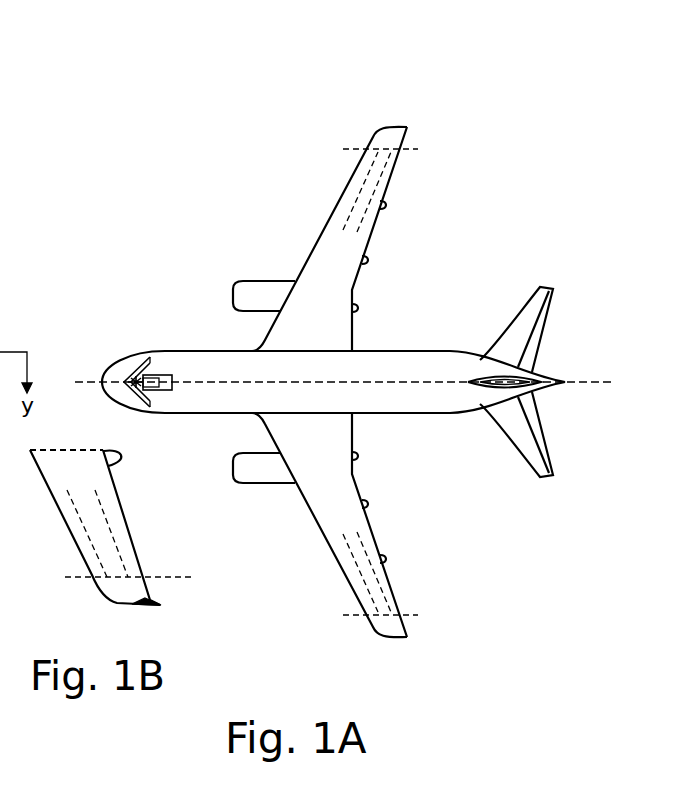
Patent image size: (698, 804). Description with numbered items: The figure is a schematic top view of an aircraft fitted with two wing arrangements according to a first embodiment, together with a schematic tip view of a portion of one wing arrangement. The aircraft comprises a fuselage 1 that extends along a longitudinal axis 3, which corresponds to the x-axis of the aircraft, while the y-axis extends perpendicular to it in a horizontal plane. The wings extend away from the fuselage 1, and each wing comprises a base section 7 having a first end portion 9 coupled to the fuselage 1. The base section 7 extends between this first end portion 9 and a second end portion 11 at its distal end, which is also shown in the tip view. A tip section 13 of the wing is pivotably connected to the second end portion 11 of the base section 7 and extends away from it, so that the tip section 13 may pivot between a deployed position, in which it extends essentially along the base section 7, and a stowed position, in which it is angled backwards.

In FIG. 1A, the fuselage 1 is at (411, 377).
In FIG. 1A, the longitudinal axis 3 is at (592, 380).
In FIG. 1B, the base section 7 is at (108, 502).
In FIG. 1A, the first end portion 9 is at (330, 351).
In FIG. 1B, the second end portion 11 is at (113, 565).
In FIG. 1B, the tip section 13 is at (128, 587).